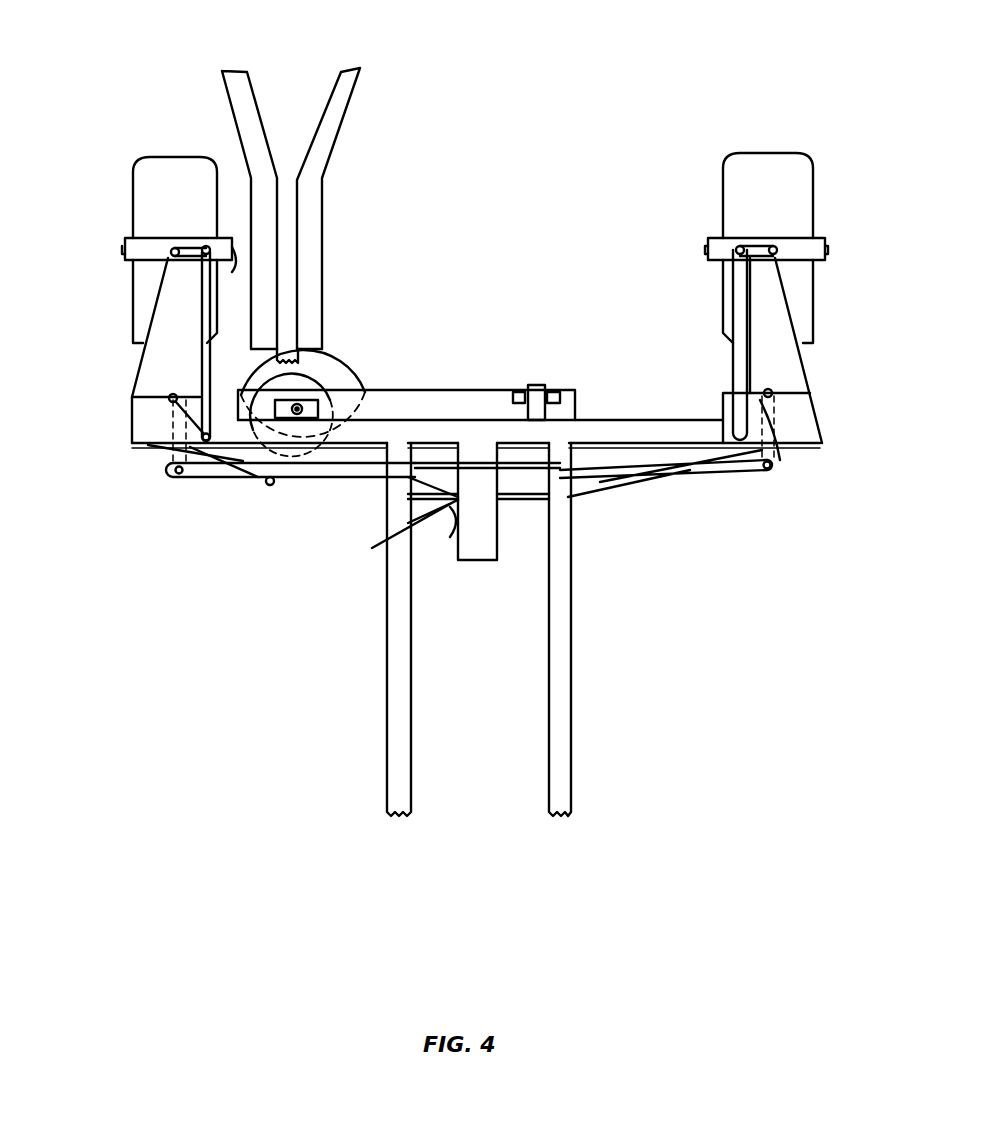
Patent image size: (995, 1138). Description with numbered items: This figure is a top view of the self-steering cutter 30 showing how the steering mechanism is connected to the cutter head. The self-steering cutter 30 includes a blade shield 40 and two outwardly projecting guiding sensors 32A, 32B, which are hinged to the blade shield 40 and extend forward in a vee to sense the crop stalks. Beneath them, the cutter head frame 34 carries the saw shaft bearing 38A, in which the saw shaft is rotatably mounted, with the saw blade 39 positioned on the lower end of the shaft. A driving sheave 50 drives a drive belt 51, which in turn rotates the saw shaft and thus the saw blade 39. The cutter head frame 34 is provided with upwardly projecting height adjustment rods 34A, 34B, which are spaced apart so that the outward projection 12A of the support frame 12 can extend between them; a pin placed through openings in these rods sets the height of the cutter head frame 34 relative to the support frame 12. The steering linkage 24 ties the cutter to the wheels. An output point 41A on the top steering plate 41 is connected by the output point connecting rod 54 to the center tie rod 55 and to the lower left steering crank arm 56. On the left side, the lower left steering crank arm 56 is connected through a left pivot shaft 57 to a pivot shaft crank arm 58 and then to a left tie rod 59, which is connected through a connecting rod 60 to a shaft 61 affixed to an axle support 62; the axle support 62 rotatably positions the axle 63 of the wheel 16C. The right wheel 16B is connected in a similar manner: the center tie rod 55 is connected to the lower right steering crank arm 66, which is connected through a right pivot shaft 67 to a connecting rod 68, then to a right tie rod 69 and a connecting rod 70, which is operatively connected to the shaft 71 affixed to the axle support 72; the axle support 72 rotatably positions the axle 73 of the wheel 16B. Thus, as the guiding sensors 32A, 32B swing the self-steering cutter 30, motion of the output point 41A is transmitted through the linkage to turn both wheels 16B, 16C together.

The support frame 12 is at (571, 598).
The outward projection 12A is at (540, 384).
The right wheel 16B is at (790, 170).
The wheel 16C is at (148, 183).
The steering linkage 24 is at (852, 266).
The self-steering cutter 30 is at (385, 138).
The guiding sensor 32A is at (255, 102).
The guiding sensor 32B is at (322, 200).
The cutter head frame 34 is at (447, 395).
The height adjustment rod 34A is at (522, 391).
The height adjustment rod 34B is at (558, 392).
The saw shaft bearing 38A is at (300, 402).
The saw blade 39 is at (291, 360).
The blade shield 40 is at (368, 372).
The top steering plate 41 is at (345, 385).
The output point 41A is at (272, 486).
The driving sheave 50 is at (465, 562).
The drive belt 51 is at (395, 540).
The output point connecting rod 54 is at (243, 478).
The center tie rod 55 is at (598, 462).
The lower left steering crank arm 56 is at (176, 470).
The left pivot shaft 57 is at (169, 396).
The pivot shaft crank arm 58 is at (185, 427).
The left tie rod 59 is at (205, 292).
The connecting rod 60 is at (206, 246).
The shaft 61 is at (173, 247).
The axle support 62 is at (130, 252).
The axle 63 is at (233, 274).
The lower right steering crank arm 66 is at (772, 474).
The right pivot shaft 67 is at (772, 392).
The connecting rod 68 is at (778, 455).
The right tie rod 69 is at (737, 372).
The connecting rod 70 is at (740, 247).
The shaft 71 is at (776, 248).
The axle support 72 is at (812, 248).
The axle 73 is at (708, 247).